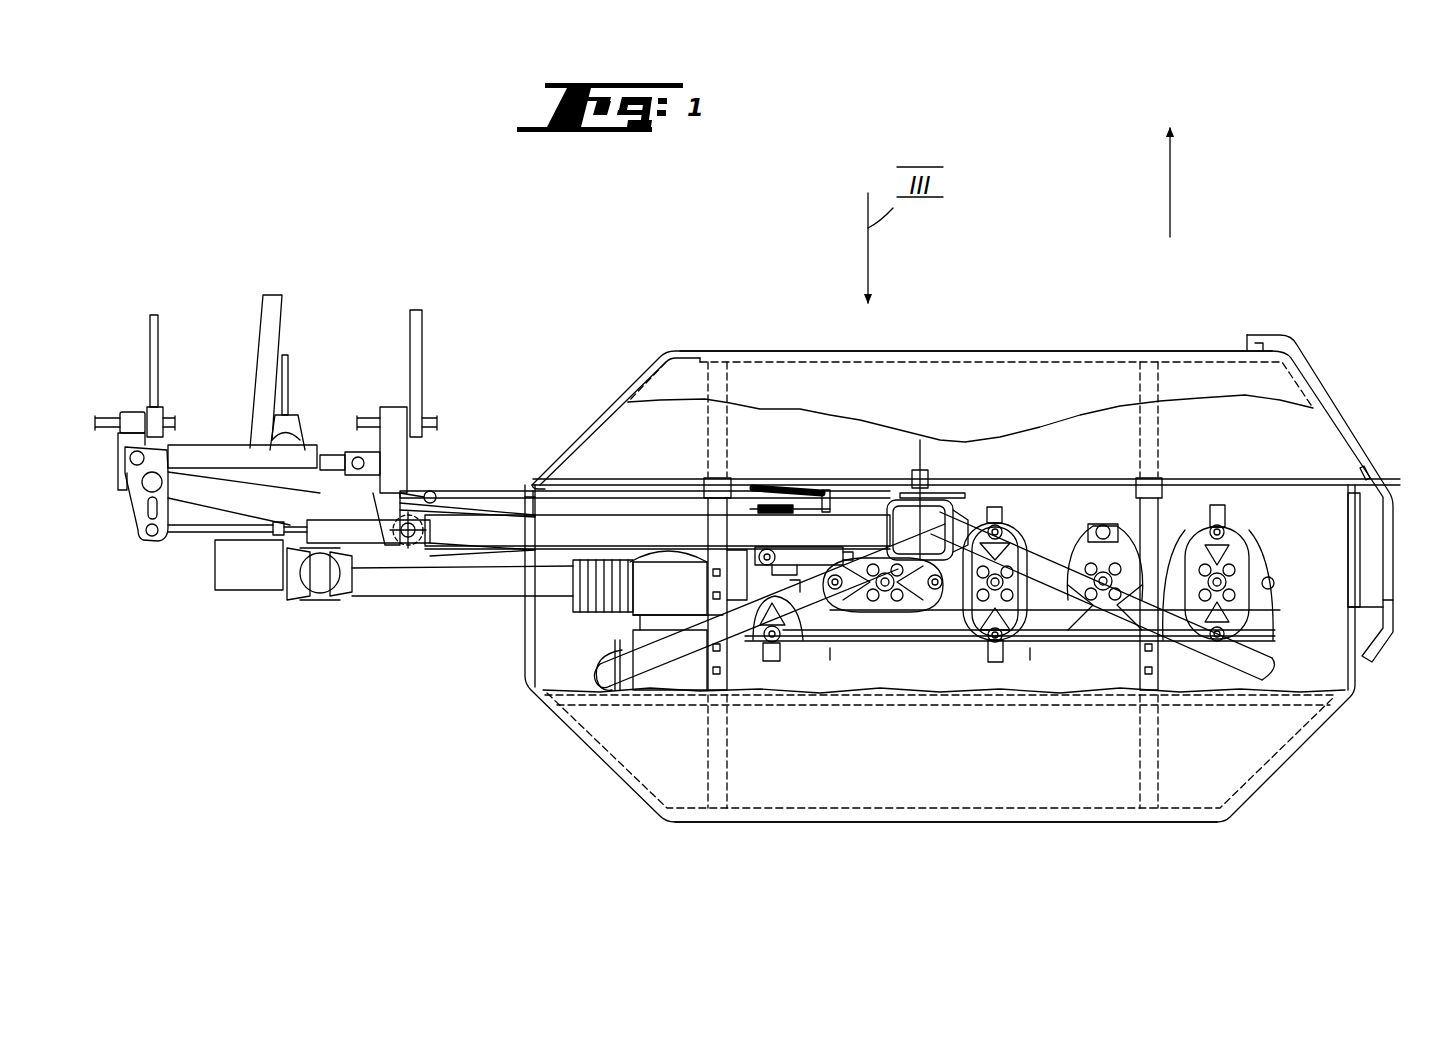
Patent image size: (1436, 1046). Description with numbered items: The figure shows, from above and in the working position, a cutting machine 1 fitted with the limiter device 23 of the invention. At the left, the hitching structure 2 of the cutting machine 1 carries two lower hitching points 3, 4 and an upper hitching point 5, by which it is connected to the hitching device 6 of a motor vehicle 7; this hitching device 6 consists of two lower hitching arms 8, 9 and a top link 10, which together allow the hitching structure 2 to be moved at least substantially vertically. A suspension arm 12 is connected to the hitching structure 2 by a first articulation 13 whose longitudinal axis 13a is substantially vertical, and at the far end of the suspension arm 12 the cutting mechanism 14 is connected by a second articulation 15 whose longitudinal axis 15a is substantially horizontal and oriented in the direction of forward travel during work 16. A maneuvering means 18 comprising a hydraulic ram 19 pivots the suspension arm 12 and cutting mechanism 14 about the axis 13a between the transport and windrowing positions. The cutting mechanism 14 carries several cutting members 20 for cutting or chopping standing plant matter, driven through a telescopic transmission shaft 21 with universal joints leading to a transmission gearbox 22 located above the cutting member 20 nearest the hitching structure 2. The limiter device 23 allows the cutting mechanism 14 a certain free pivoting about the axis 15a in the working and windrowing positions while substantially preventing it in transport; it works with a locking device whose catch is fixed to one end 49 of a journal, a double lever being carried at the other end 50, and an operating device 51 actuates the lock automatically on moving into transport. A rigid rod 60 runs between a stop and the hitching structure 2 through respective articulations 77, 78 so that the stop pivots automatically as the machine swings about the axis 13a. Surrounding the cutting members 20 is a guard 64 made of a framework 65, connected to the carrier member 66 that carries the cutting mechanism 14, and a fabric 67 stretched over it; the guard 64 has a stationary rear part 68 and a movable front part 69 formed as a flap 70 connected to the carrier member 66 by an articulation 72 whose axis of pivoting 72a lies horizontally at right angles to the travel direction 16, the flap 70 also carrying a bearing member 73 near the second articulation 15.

The cutting machine 1 is at (822, 328).
The hitching structure 2 is at (385, 405).
The lower hitching point 3 is at (425, 415).
The lower hitching point 4 is at (170, 410).
The upper hitching point 5 is at (298, 412).
The hitching device 6 is at (424, 318).
The motor vehicle 7 is at (157, 318).
The lower hitching arm 8 is at (410, 355).
The lower hitching arm 9 is at (150, 368).
The top link 10 is at (282, 318).
The suspension arm 12 is at (623, 525).
The first articulation 13 is at (413, 555).
The longitudinal axis of the first articulation 13a is at (387, 557).
The cutting mechanism 14 is at (1260, 530).
The second articulation 15 is at (955, 522).
The longitudinal axis of the second articulation 15a is at (920, 468).
The direction of forward travel during work 16 is at (1170, 178).
The maneuvering means 18 is at (221, 443).
The hydraulic ram 19 is at (200, 493).
The cutting member 20 is at (1242, 583).
The telescopic transmission shaft 21 is at (512, 588).
The transmission gearbox 22 is at (652, 600).
The limiter device 23 is at (795, 576).
The end of the journal 49 is at (780, 588).
The end of the journal 50 is at (806, 490).
The operating device 51 is at (522, 489).
The rigid rod 60 is at (486, 490).
The guard 64 is at (905, 328).
The framework 65 is at (1157, 437).
The carrier member 66 is at (1127, 617).
The fabric 67 is at (763, 320).
The rear part of the guard 68 is at (982, 826).
The front part of the guard 69 is at (1032, 326).
The flap 70 is at (1195, 322).
The articulation 72 is at (733, 490).
The axis of pivoting 72a is at (1393, 482).
The bearing member 73 is at (930, 480).
The articulation 77 is at (952, 497).
The articulation 78 is at (434, 491).